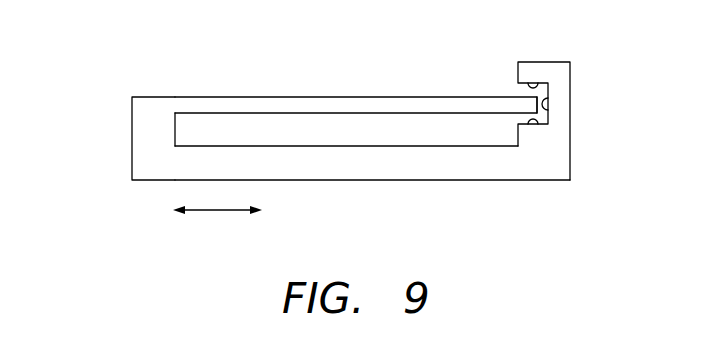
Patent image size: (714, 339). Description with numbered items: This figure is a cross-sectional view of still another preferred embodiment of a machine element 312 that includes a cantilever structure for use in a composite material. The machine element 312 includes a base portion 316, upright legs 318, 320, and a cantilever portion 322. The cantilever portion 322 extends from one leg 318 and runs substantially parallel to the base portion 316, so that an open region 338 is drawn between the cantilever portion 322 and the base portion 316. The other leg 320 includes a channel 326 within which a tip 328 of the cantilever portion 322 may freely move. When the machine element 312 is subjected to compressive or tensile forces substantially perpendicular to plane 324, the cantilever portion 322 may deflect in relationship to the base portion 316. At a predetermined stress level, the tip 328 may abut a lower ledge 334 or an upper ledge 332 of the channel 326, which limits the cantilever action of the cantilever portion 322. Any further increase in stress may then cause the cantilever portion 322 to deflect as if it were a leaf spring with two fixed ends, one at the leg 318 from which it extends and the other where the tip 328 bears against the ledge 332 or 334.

The machine element 312 is at (218, 61).
The base portion 316 is at (437, 180).
The upright leg 318 is at (132, 140).
The upright leg 320 is at (570, 85).
The cantilever portion 322 is at (302, 97).
The plane 324 is at (213, 210).
The channel 326 is at (548, 110).
The tip 328 is at (533, 94).
The upper ledge 332 is at (528, 84).
The lower ledge 334 is at (528, 124).
The cavity 338 is at (370, 141).